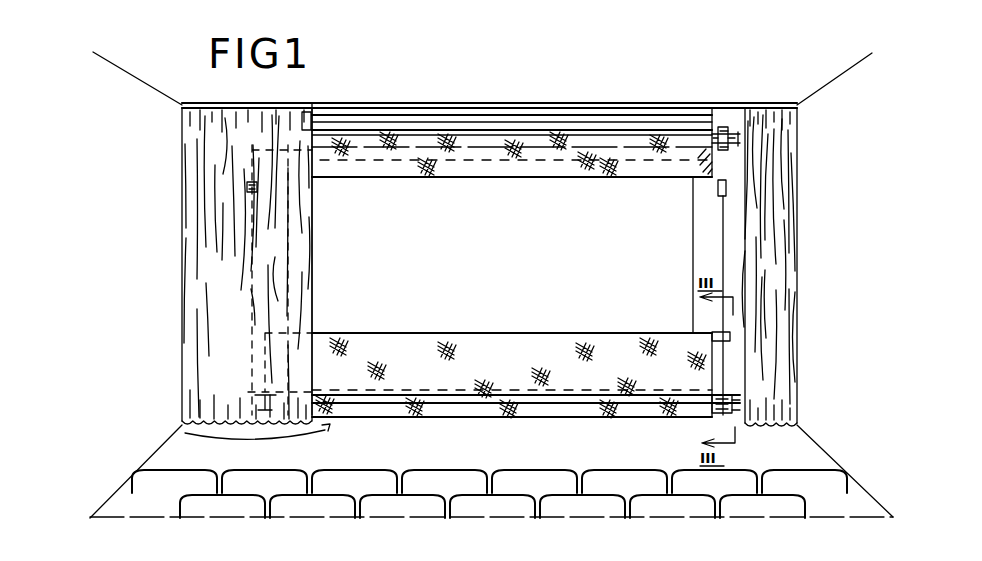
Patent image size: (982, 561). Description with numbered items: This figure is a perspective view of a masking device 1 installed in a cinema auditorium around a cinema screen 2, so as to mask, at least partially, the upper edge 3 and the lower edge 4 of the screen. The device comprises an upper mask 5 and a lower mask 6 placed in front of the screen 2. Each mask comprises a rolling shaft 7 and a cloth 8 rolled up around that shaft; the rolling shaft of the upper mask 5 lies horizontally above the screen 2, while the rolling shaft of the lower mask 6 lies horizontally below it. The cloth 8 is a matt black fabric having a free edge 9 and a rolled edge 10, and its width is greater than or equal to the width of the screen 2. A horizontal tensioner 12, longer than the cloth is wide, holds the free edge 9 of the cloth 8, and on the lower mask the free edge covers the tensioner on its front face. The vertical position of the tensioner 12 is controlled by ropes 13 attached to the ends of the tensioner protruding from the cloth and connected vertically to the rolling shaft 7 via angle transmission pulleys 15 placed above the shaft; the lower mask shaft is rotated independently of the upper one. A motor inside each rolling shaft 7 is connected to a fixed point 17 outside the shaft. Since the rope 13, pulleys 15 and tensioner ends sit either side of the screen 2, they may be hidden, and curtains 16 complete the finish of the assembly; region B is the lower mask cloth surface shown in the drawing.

The masking device 1 is at (633, 182).
The cinema screen 2 is at (486, 272).
The upper edge 3 is at (402, 153).
The lower edge 4 is at (466, 397).
The upper mask 5 is at (722, 166).
The lower mask 6 is at (182, 427).
The rolling shaft 7 is at (720, 128).
The cloth 8 is at (534, 178).
The free edge 9 is at (391, 332).
The rolled edge 10 is at (560, 422).
The horizontal tensioner 12 is at (730, 337).
The ropes 13 is at (723, 238).
The angle transmission pulleys 15 is at (727, 187).
The curtains 16 is at (205, 308).
The fixed point 17 is at (730, 132).
The lower panel surface B is at (505, 368).